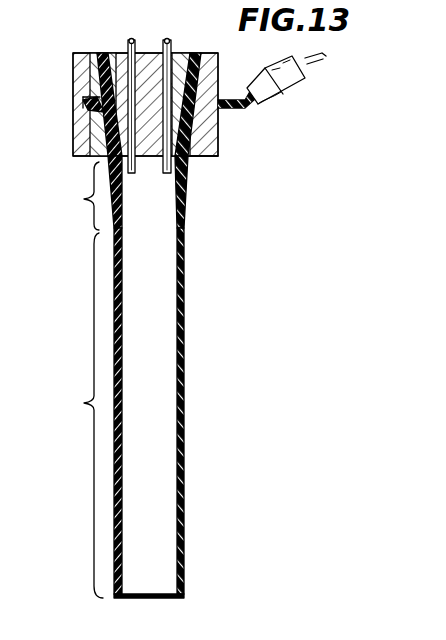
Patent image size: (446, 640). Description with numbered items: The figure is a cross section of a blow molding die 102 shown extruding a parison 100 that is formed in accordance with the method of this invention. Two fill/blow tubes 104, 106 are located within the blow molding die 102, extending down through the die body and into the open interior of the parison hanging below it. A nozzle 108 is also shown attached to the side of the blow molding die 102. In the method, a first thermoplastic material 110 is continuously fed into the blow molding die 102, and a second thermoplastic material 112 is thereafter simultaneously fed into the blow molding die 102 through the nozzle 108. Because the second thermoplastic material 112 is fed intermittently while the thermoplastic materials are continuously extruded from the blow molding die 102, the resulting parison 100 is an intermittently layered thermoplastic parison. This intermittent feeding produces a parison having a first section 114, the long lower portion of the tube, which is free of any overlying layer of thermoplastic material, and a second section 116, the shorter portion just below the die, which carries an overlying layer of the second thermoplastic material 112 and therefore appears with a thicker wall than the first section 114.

The parison 100 is at (198, 430).
The blow molding die 102 is at (73, 147).
The fill/blow tube 104 is at (131, 40).
The fill/blow tube 106 is at (168, 40).
The nozzle 108 is at (283, 107).
The first thermoplastic material 110 is at (195, 53).
The second thermoplastic material 112 is at (218, 156).
The first section 114 is at (80, 415).
The second section 116 is at (78, 196).